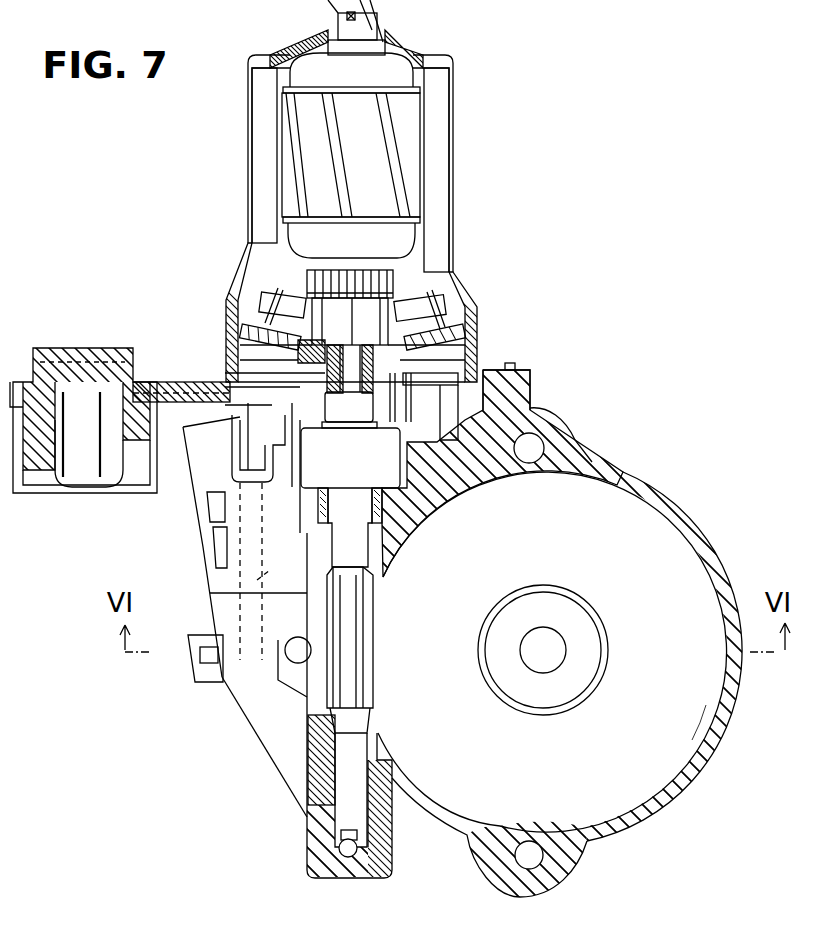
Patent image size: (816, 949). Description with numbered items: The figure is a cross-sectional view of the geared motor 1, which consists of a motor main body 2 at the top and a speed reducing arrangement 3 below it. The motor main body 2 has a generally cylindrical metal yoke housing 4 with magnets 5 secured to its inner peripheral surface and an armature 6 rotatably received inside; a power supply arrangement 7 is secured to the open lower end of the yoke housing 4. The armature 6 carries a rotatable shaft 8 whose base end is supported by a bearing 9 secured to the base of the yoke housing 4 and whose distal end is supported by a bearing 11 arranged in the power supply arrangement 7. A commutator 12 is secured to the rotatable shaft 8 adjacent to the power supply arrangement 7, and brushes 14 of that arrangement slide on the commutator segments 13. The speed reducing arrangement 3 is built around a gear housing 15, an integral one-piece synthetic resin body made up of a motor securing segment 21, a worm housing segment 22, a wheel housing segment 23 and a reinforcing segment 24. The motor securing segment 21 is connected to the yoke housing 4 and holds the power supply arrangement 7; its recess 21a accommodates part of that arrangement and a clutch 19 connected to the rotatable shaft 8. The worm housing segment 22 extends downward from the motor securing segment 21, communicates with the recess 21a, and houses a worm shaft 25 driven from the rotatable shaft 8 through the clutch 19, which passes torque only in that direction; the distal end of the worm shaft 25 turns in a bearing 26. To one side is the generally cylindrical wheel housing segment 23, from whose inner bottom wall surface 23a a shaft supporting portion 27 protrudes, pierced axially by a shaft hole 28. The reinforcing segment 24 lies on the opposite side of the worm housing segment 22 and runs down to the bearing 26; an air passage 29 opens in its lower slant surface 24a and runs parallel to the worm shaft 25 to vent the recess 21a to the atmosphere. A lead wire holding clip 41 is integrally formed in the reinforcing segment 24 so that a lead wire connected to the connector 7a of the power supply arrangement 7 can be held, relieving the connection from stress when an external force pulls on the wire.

The geared motor 1 is at (630, 240).
The motor main body 2 is at (538, 220).
The speed reducing arrangement 3 is at (609, 362).
The yoke housing 4 is at (455, 88).
The magnets 5 is at (258, 115).
The armature 6 is at (415, 148).
The power supply arrangement 7 is at (477, 325).
The connector 7a is at (28, 490).
The rotatable shaft 8 is at (377, 50).
The bearing 9 is at (325, 32).
The bearing 11 is at (332, 350).
The commutator 12 is at (298, 283).
The commutator segments 13 is at (367, 307).
The brushes 14 is at (280, 313).
The gear housing 15 is at (573, 437).
The clutch 19 is at (332, 474).
The motor securing segment 21 is at (532, 390).
The recess 21a is at (235, 455).
The worm housing segment 22 is at (307, 847).
The wheel housing segment 23 is at (720, 570).
The inner bottom wall surface 23a is at (700, 702).
The reinforcing segment 24 is at (220, 582).
The lower slant surface 24a is at (240, 702).
The worm shaft 25 is at (330, 700).
The bearing 26 is at (325, 785).
The shaft supporting portion 27 is at (600, 670).
The shaft hole 28 is at (543, 667).
The air passage 29 is at (257, 580).
The lead wire holding clip 41 is at (193, 665).